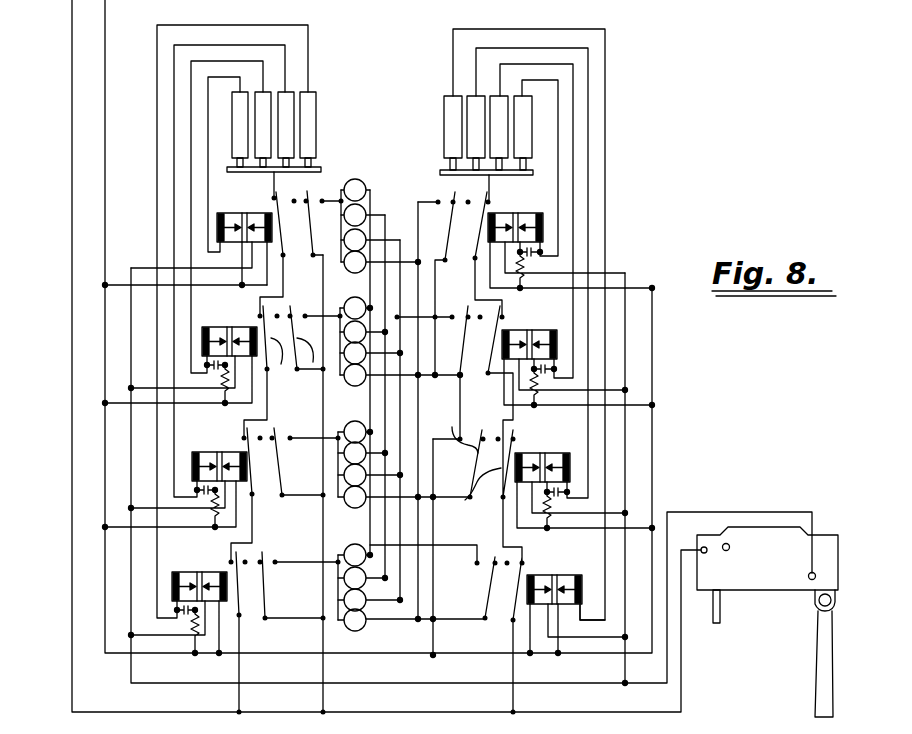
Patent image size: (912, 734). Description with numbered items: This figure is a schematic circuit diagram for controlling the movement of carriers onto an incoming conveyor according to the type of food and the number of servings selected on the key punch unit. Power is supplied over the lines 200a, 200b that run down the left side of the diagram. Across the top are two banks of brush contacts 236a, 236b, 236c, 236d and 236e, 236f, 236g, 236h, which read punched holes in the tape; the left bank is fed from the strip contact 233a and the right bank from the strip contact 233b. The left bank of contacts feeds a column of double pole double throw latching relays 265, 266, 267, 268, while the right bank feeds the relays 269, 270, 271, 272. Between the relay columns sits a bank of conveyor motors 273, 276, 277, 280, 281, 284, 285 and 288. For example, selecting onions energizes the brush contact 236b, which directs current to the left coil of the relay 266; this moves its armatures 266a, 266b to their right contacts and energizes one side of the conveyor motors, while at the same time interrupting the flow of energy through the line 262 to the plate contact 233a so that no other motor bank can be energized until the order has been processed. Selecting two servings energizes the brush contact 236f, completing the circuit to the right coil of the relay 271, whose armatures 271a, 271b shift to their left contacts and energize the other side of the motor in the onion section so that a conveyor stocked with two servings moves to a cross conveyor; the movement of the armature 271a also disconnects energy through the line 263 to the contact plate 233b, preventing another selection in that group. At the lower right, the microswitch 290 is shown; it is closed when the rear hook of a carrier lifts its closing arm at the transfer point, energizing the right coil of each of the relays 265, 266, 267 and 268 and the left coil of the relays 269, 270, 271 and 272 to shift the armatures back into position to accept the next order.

The power supply line 200a is at (72, 36).
The power supply line 200b is at (105, 70).
The brush contact 236a is at (240, 120).
The brush contact 236b is at (262, 116).
The brush contact 236c is at (284, 112).
The brush contact 236d is at (310, 122).
The brush contact 236e is at (448, 110).
The brush contact 236f is at (476, 110).
The brush contact 236g is at (498, 108).
The brush contact 236h is at (522, 130).
The electrical strip contact 233a is at (310, 170).
The electrical strip contact 233b is at (440, 174).
The line 262 is at (272, 182).
The line 263 is at (490, 184).
The latching relay 265 is at (252, 213).
The double pole double throw latching relay 266 is at (236, 330).
The armature 266a is at (287, 367).
The armature 266b is at (295, 377).
The latching relay 267 is at (228, 454).
The latching relay 268 is at (204, 572).
The latching relay 269 is at (508, 213).
The latching relay 270 is at (552, 332).
The double pole double throw latching relay 271 is at (532, 454).
The armature 271a is at (472, 495).
The armature 271b is at (458, 430).
The latching relay 272 is at (566, 568).
The conveyor motor 273 is at (366, 184).
The conveyor motor 276 is at (362, 284).
The conveyor motor 277 is at (344, 308).
The conveyor motor 280 is at (356, 386).
The conveyor motor 281 is at (362, 422).
The conveyor motor 284 is at (354, 508).
The conveyor motor 285 is at (344, 555).
The conveyor motor 288 is at (358, 626).
The microswitch 290 is at (750, 576).